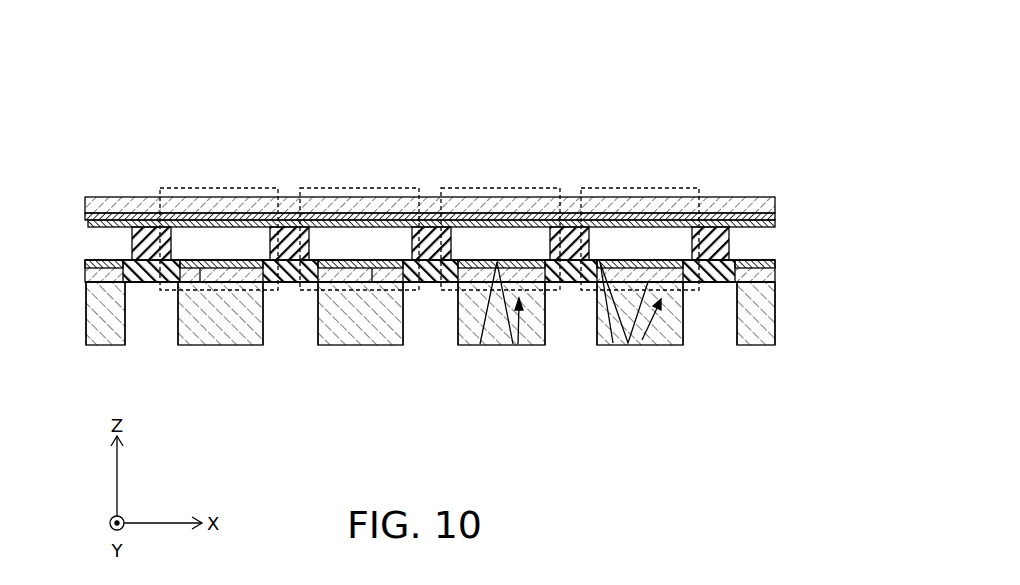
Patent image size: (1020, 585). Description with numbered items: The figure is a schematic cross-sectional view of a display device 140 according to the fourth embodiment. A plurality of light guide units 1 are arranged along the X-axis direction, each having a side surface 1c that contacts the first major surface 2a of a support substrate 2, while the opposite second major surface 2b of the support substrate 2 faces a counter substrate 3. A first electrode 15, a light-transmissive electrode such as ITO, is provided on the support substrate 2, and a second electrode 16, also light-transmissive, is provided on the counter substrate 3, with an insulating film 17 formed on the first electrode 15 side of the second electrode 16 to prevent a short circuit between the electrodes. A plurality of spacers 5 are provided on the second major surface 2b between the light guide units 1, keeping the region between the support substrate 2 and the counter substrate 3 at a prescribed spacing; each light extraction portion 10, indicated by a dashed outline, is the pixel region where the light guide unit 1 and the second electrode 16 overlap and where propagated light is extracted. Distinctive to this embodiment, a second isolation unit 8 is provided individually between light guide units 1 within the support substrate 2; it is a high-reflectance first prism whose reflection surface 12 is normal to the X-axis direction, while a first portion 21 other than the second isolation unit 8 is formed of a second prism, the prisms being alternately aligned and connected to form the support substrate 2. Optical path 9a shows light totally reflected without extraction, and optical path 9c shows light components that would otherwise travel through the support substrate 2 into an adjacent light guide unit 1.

The display device 140 is at (670, 98).
The light guide unit 1 is at (222, 328).
The side surface 1c is at (200, 275).
The support substrate 2 is at (90, 272).
The first major surface 2a is at (760, 283).
The second major surface 2b is at (760, 262).
The counter substrate 3 is at (115, 204).
The spacer 5 is at (290, 240).
The second isolation unit 8 is at (148, 275).
The optical path 9a is at (518, 346).
The optical path 9c is at (643, 342).
The light extraction portion 10 is at (217, 188).
The reflection surface 12 is at (116, 280).
The first electrode 15 is at (95, 264).
The second electrode 16 is at (90, 216).
The insulating film 17 is at (90, 224).
The first portion 21 is at (520, 272).